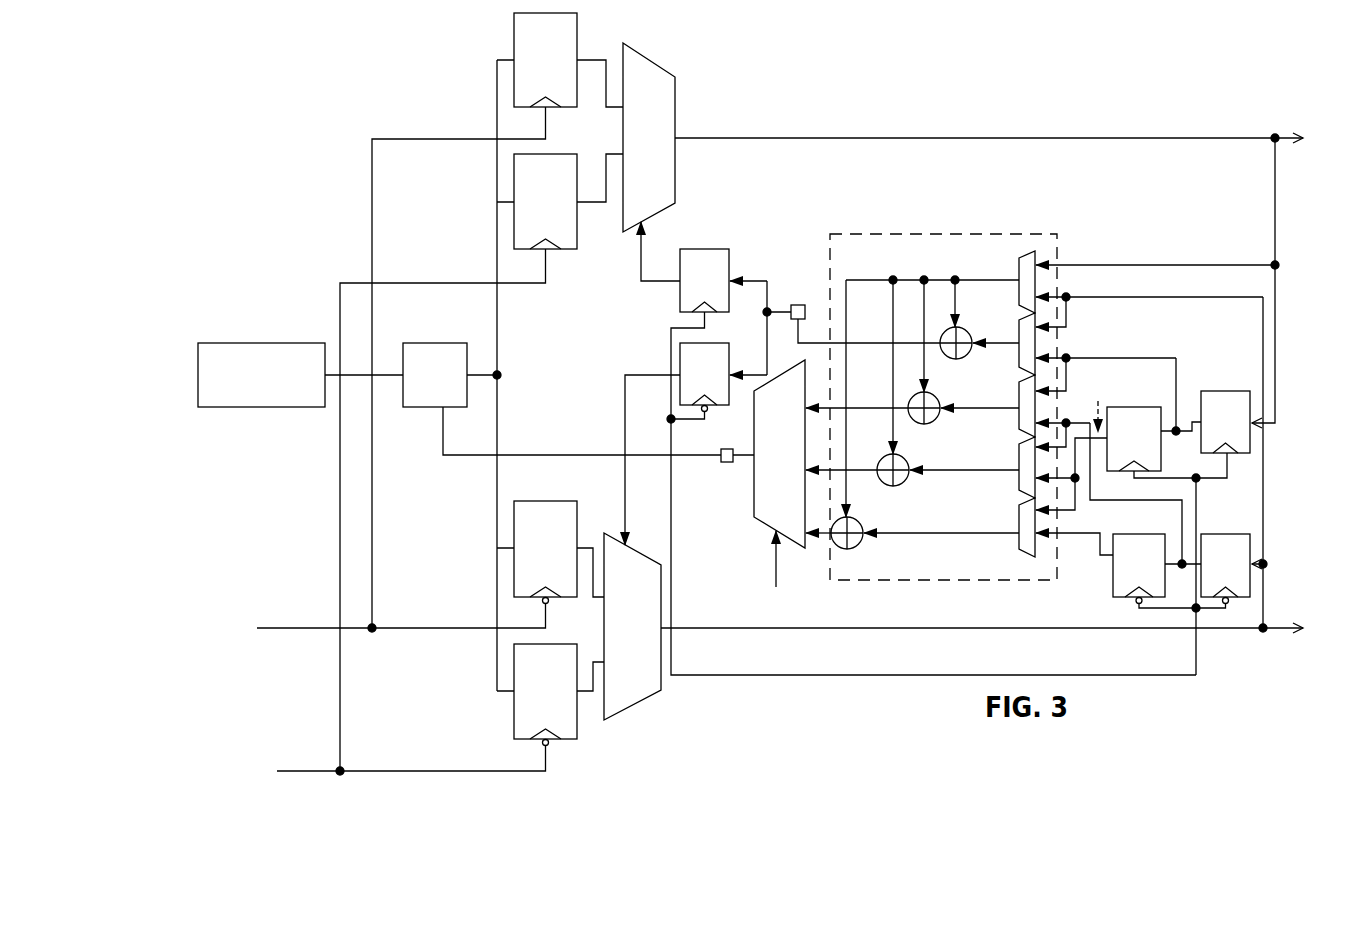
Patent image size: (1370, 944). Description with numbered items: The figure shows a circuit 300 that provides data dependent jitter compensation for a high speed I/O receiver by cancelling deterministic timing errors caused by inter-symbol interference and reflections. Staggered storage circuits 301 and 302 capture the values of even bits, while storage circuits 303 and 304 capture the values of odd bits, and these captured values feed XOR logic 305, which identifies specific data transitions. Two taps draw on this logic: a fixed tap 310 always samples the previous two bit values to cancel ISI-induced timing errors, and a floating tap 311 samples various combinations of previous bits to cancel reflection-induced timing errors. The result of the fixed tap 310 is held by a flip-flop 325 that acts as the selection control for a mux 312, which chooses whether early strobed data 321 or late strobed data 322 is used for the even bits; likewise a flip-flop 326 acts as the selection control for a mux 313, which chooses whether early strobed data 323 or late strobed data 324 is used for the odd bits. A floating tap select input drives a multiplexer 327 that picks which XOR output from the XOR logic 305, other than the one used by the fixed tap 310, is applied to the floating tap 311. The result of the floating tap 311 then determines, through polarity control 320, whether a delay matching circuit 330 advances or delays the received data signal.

The circuit 300 is at (366, 95).
The storage circuit 301 is at (1225, 422).
The storage circuit 302 is at (1134, 439).
The storage circuit 303 is at (1225, 569).
The storage circuit 304 is at (1139, 569).
The XOR logic 305 is at (931, 407).
The fixed tap 310 is at (791, 301).
The floating tap 311 is at (719, 470).
The mux 312 is at (649, 137).
The mux 313 is at (632, 626).
The polarity control 320 is at (435, 375).
The early strobed data 321 is at (545, 60).
The late strobed data 322 is at (545, 201).
The early strobed data 323 is at (545, 552).
The late strobed data 324 is at (545, 695).
The flip-flop 325 is at (704, 280).
The flip-flop 326 is at (704, 377).
The floating tap multiplexer 327 is at (779, 454).
The delay matching circuit 330 is at (261, 375).